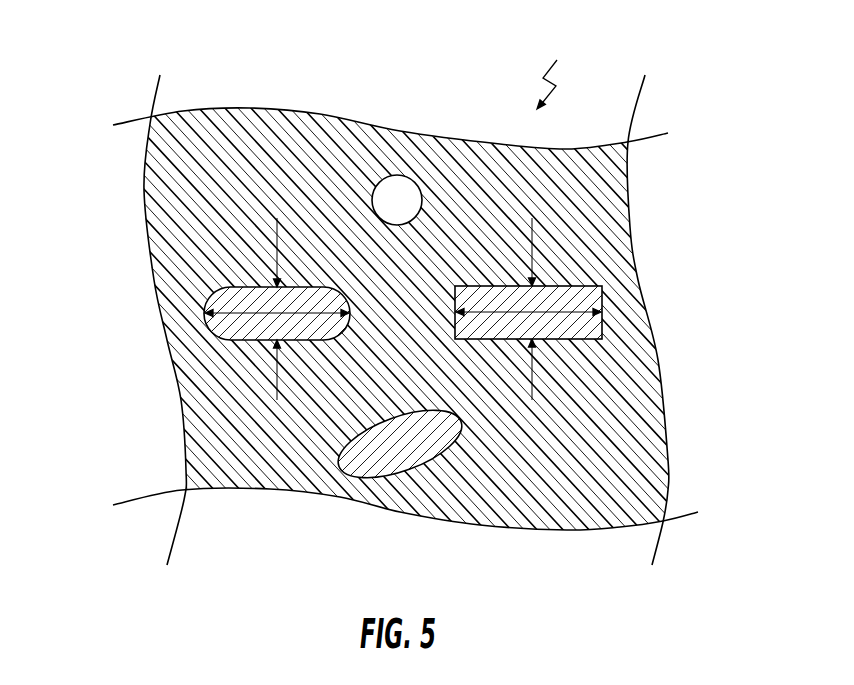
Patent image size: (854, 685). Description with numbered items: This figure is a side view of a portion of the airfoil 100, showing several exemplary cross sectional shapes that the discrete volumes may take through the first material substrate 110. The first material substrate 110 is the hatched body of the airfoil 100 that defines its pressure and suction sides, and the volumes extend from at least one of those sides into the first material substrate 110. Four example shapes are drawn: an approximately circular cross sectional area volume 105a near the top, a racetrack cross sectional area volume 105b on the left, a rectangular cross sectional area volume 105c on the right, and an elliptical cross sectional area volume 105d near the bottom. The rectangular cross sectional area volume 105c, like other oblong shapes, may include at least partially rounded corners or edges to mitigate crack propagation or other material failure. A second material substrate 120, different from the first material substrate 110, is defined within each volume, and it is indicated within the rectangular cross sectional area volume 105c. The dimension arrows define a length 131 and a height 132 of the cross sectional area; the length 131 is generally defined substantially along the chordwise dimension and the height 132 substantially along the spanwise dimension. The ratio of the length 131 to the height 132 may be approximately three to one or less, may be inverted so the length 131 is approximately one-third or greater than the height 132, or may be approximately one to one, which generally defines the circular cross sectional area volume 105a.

The airfoil 100 is at (556, 68).
The first material substrate 110 is at (273, 130).
The circular cross sectional area volume 105a is at (398, 175).
The racetrack cross sectional area volume 105b is at (207, 310).
The rectangular cross sectional area volume 105c is at (603, 300).
The elliptical cross sectional area volume 105d is at (355, 478).
The second material substrate 120 is at (577, 327).
The length 131 is at (250, 318).
The height 132 is at (276, 242).